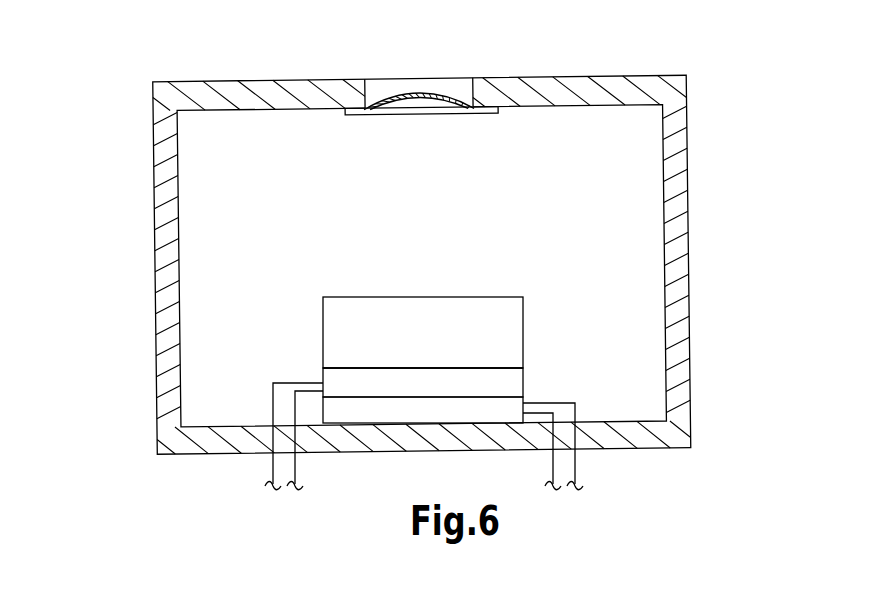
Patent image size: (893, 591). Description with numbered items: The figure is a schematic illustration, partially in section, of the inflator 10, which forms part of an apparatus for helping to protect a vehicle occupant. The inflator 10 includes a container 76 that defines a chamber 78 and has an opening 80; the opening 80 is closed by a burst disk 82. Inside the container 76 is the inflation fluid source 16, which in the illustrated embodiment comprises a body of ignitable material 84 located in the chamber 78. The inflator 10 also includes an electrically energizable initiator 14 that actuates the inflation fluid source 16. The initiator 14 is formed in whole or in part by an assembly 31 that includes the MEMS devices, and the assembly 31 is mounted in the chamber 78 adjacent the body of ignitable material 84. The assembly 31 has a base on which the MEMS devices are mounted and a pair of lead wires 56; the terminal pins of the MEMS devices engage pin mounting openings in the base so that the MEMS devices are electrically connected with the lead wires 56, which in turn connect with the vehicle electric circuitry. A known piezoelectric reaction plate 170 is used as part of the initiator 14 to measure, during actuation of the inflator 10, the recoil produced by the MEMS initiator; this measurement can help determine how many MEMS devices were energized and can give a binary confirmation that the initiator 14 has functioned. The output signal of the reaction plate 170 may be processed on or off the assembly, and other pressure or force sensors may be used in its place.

The inflator 10 is at (118, 403).
The initiator 14 is at (318, 367).
The inflation fluid source 16 is at (357, 298).
The assembly 31 is at (526, 378).
The lead wires 56 is at (295, 473).
The container 76 is at (690, 245).
The chamber 78 is at (610, 213).
The opening 80 is at (463, 107).
The burst disk 82 is at (411, 95).
The body of ignitable material 84 is at (394, 328).
The piezoelectric reaction plate 170 is at (365, 410).